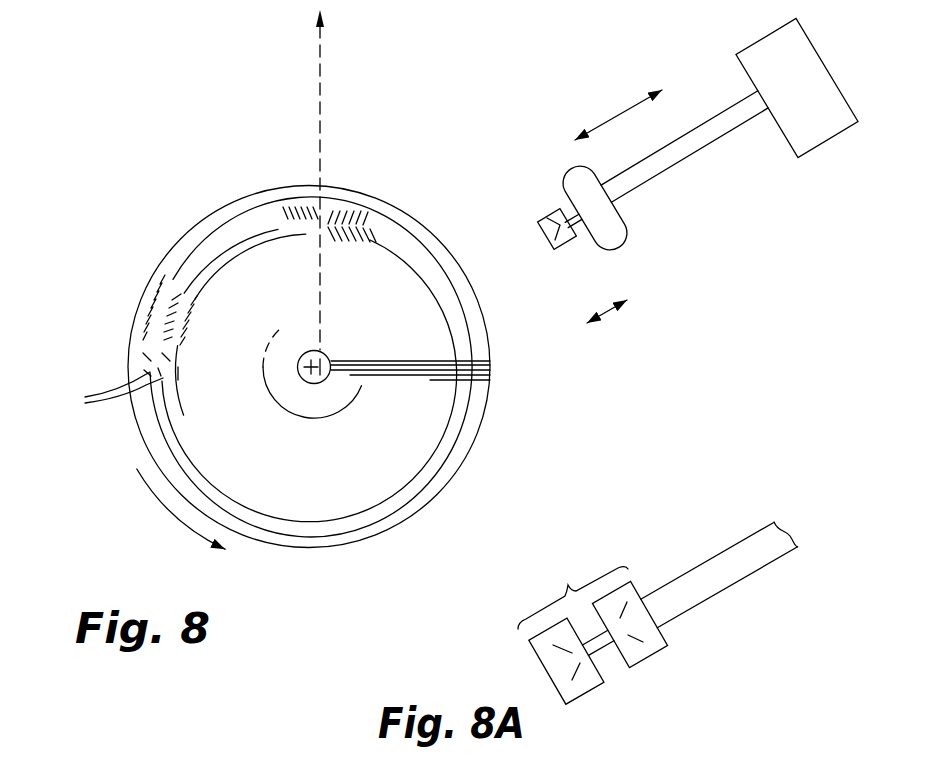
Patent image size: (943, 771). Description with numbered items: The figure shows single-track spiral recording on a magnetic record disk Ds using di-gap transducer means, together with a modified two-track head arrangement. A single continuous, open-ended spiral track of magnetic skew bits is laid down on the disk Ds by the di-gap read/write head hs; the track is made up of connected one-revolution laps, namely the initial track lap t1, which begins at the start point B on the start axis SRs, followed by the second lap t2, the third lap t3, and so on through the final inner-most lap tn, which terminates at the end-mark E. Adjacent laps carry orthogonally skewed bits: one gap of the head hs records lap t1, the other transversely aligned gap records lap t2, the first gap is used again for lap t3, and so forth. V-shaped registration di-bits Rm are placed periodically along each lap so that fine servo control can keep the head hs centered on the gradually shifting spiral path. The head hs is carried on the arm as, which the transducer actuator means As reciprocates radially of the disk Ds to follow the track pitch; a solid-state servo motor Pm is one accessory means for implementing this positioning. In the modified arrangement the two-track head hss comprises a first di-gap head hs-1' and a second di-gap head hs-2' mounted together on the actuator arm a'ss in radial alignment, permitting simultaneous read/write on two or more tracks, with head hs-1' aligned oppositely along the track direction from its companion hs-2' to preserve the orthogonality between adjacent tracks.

In FIG. 8, the magnetic record disk Ds is at (120, 313).
In FIG. 8, the initial track lap t1 is at (247, 203).
In FIG. 8, the second track lap t2 is at (208, 250).
In FIG. 8, the third track lap t3 is at (263, 243).
In FIG. 8, the final inner-most track lap tn is at (318, 416).
In FIG. 8, the end-mark E is at (354, 373).
In FIG. 8, the start point B is at (316, 196).
In FIG. 8, the start axis SRs is at (319, 62).
In FIG. 8, the registration di-bits Rm is at (95, 394).
In FIG. 8, the transducer actuator means As is at (828, 141).
In FIG. 8, the arm as is at (694, 160).
In FIG. 8, the servo motor Pm is at (619, 246).
In FIG. 8, the di-gap read/write head hs is at (568, 247).
In FIG. 8A, the actuator arm a'ss is at (719, 559).
In FIG. 8A, the two-track head arrangement hss is at (573, 601).
In FIG. 8A, the first di-gap head hs-1' is at (682, 637).
In FIG. 8A, the second di-gap head hs-2' is at (616, 675).